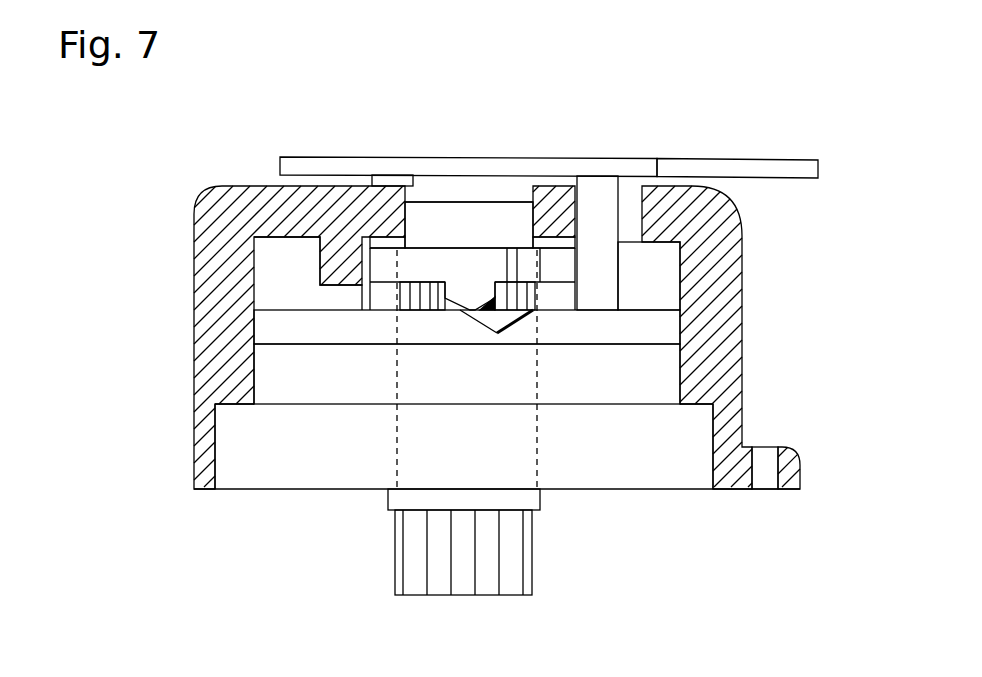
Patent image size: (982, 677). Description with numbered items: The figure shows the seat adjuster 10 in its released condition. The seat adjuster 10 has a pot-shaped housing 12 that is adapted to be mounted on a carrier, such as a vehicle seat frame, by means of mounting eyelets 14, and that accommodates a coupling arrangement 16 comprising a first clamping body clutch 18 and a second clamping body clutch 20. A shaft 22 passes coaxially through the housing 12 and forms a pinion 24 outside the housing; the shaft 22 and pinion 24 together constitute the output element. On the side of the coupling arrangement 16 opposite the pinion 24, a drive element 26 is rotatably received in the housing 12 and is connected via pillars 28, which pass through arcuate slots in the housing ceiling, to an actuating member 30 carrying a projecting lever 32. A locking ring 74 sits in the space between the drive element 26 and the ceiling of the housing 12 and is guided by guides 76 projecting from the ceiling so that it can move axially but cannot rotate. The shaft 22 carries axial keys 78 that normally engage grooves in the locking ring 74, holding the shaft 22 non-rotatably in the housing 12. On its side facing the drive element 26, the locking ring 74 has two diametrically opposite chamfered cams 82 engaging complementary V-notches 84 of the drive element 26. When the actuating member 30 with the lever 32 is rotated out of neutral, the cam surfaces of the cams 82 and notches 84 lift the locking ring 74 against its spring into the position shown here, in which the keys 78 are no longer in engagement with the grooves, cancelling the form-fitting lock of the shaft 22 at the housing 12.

The seat adjuster 10 is at (146, 333).
The housing 12 is at (192, 385).
The mounting eyelets 14 is at (765, 473).
The coupling arrangement 16 is at (327, 494).
The first clamping body clutch 18 is at (605, 472).
The second clamping body clutch 20 is at (657, 370).
The shaft 22 is at (493, 250).
The pinion 24 is at (523, 570).
The drive element 26 is at (322, 327).
The pillars 28 is at (611, 195).
The actuating member 30 is at (312, 157).
The lever 32 is at (768, 170).
The locking ring 74 is at (447, 267).
The guides 76 is at (325, 267).
The axial keys 78 is at (398, 305).
The cams 82 is at (462, 293).
The V-notches 84 is at (490, 323).